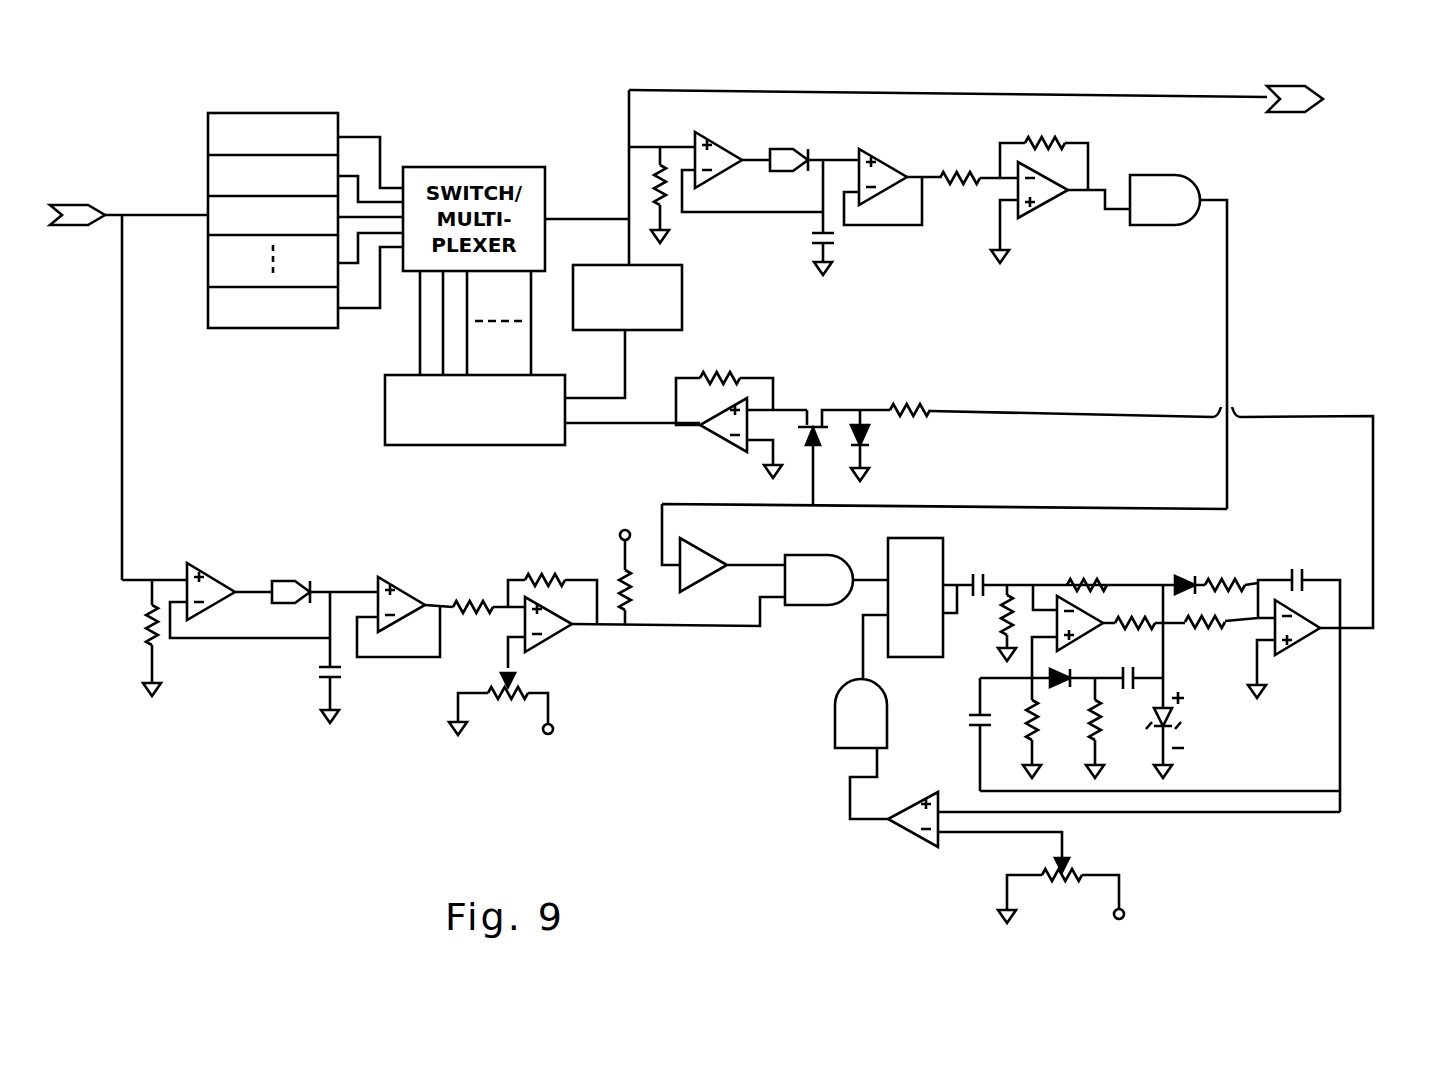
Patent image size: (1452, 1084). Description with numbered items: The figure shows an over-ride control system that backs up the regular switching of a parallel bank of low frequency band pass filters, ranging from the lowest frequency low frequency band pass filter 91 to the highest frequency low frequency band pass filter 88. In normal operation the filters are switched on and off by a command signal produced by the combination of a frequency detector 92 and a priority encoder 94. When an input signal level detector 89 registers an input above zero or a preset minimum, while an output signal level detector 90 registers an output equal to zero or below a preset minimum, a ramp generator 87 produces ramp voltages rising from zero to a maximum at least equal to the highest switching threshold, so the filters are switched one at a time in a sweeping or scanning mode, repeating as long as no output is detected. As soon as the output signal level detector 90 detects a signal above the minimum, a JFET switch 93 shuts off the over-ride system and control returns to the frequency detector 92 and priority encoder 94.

The ramp generator 87 is at (1355, 683).
The highest frequency low frequency band pass filter 88 is at (259, 257).
The input signal level detector 89 is at (397, 672).
The output signal level detector 90 is at (922, 225).
The lowest frequency low frequency band pass filter 91 is at (208, 137).
The frequency detector 92 is at (682, 295).
The JFET switch 93 is at (813, 408).
The priority encoder 94 is at (470, 445).